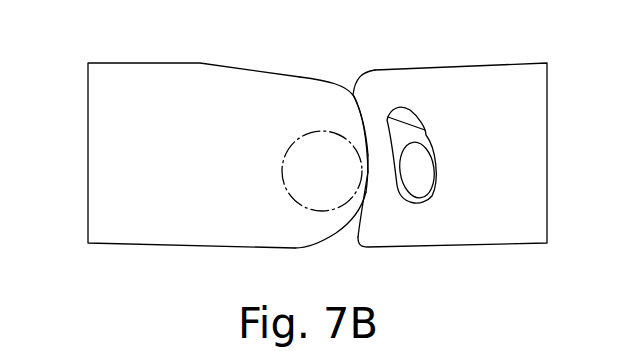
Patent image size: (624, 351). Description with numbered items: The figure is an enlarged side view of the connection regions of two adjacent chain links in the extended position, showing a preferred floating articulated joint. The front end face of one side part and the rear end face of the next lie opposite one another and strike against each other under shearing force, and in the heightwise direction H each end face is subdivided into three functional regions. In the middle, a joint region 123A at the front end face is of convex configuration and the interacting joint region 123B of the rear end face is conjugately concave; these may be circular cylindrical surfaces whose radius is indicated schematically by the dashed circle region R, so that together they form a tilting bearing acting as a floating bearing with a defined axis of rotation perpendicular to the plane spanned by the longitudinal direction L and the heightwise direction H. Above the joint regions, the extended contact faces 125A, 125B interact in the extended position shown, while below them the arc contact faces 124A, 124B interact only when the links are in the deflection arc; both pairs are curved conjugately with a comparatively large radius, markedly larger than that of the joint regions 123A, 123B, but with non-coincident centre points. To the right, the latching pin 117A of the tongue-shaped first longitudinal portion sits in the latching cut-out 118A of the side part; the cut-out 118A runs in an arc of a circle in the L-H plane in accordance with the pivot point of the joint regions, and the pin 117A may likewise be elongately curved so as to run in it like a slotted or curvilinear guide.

The joint region 123A is at (355, 175).
The joint region 123B is at (370, 158).
The extended contact face 125A is at (357, 94).
The extended contact face 125B is at (357, 127).
The arc contact face 124A is at (364, 210).
The arc contact face 124B is at (354, 229).
The latching cut-out 118A is at (429, 133).
The latching pin 117A is at (420, 175).
The radius R is at (304, 215).
The heightwise direction H is at (60, 54).
The longitudinal direction L is at (126, 158).